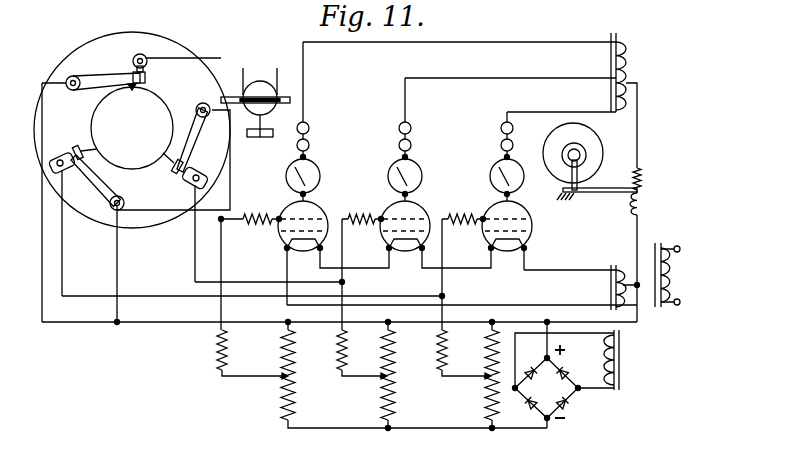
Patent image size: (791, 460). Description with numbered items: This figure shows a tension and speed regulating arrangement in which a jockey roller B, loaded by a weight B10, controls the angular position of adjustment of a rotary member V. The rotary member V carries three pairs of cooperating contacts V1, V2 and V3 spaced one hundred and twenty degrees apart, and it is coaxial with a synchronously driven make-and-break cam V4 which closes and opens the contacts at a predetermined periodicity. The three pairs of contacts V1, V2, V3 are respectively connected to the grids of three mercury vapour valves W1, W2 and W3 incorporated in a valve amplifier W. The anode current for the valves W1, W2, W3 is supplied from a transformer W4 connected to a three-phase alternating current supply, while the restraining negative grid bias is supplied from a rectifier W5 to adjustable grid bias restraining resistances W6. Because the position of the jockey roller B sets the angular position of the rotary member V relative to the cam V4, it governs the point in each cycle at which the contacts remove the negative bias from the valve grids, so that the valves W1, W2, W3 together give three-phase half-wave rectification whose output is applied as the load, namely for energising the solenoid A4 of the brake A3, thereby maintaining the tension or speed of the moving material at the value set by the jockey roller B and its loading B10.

The rotary member V is at (153, 50).
The pair of cooperating contacts V1 is at (133, 72).
The pair of cooperating contacts V2 is at (177, 172).
The pair of cooperating contacts V3 is at (70, 150).
The make-and-break cam V4 is at (142, 125).
The jockey roller B is at (261, 86).
The weight B10 is at (265, 138).
The mercury vapour valve W1 is at (318, 214).
The mercury vapour valve W2 is at (421, 213).
The mercury vapour valve W3 is at (517, 213).
The transformer W4 is at (657, 233).
The rectifier W5 is at (554, 383).
The adjustable grid bias restraining resistances W6 is at (483, 394).
The brake A3 is at (582, 145).
The solenoid A4 is at (639, 203).
The valve amplifier W is at (267, 403).